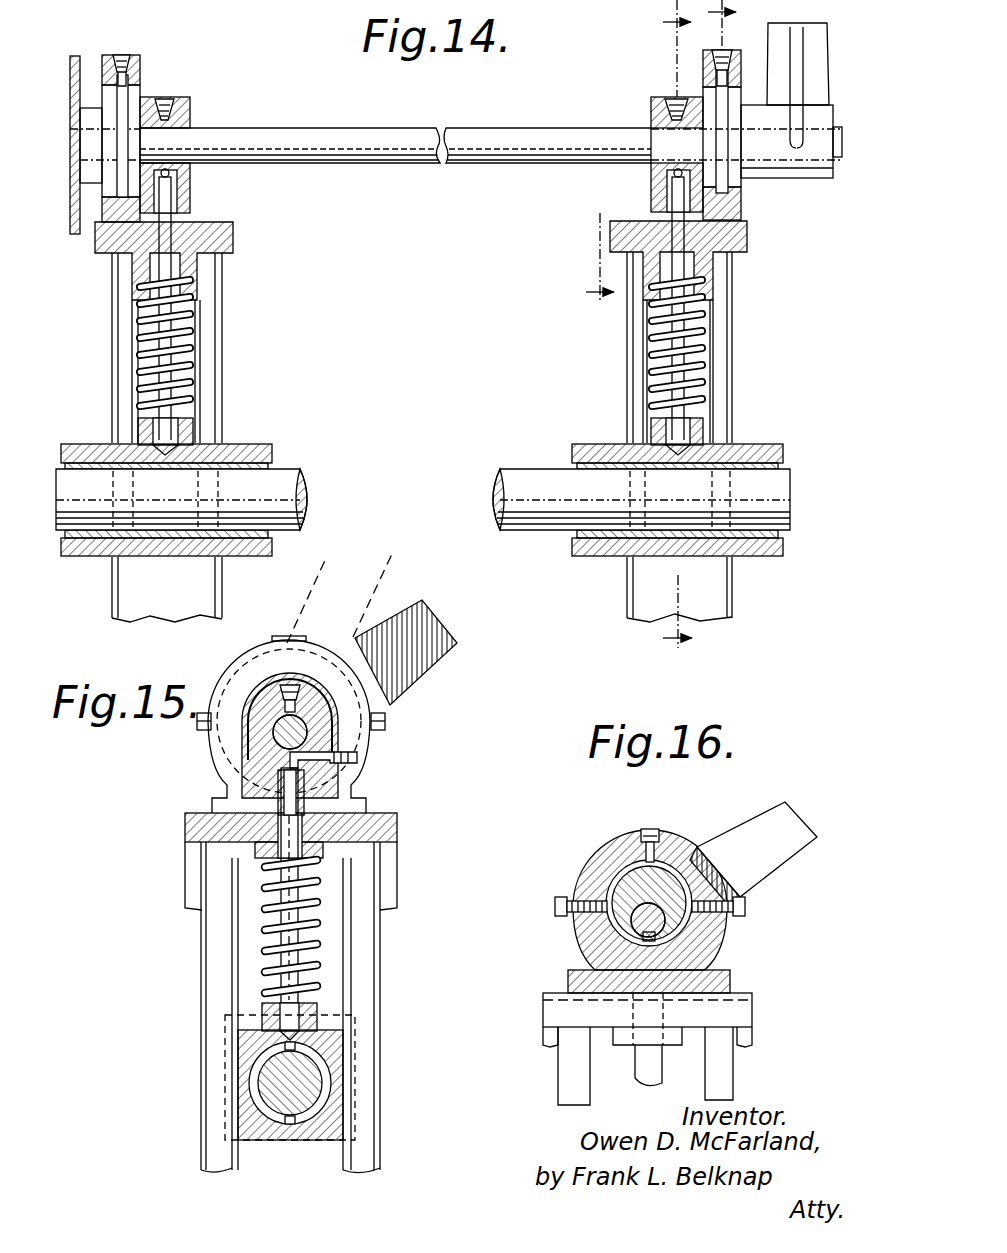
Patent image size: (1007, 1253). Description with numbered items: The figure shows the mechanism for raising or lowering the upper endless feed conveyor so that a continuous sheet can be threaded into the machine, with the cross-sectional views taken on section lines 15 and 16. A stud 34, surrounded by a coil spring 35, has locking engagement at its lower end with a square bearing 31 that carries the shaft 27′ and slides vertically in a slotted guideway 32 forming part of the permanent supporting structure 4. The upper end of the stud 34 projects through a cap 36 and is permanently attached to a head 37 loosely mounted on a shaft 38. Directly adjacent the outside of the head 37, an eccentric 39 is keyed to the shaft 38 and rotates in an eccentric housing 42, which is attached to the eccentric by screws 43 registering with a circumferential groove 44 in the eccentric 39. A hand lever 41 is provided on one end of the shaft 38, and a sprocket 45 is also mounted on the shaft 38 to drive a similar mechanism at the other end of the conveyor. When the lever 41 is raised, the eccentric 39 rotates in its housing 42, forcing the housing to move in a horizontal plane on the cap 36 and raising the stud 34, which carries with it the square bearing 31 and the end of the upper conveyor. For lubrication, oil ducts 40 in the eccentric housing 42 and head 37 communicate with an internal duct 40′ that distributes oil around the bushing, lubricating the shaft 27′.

In FIG. 14, the permanent supporting structure 4 is at (222, 600).
In FIG. 15, the permanent supporting structure 4 is at (201, 997).
In FIG. 14, the section line 15— 15 is at (673, 335).
In FIG. 14, the section line 16— 16 is at (659, 165).
In FIG. 14, the shaft 27′ is at (306, 478).
In FIG. 15, the shaft 27′ is at (270, 1140).
In FIG. 14, the square bearing 31 is at (262, 445).
In FIG. 15, the square bearing 31 is at (330, 1056).
In FIG. 15, the slotted guideway 32 is at (343, 975).
In FIG. 14, the stud 34 is at (167, 352).
In FIG. 15, the stud 34 is at (300, 905).
In FIG. 16, the stud 34 is at (657, 1067).
In FIG. 14, the coil spring 35 is at (185, 345).
In FIG. 15, the coil spring 35 is at (302, 950).
In FIG. 14, the cap 36 is at (235, 240).
In FIG. 15, the cap 36 is at (398, 826).
In FIG. 14, the head 37 is at (192, 200).
In FIG. 15, the head 37 is at (340, 778).
In FIG. 14, the shaft 38 is at (276, 130).
In FIG. 15, the shaft 38 is at (286, 734).
In FIG. 16, the shaft 38 is at (617, 862).
In FIG. 14, the eccentric 39 is at (143, 100).
In FIG. 16, the eccentric 39 is at (648, 870).
In FIG. 14, the oil duct 40 is at (122, 56).
In FIG. 15, the oil duct 40 is at (288, 688).
In FIG. 16, the oil duct 40 is at (650, 829).
In FIG. 15, the internal duct 40′ is at (268, 938).
In FIG. 14, the hand lever 41 is at (820, 46).
In FIG. 15, the hand lever 41 is at (452, 683).
In FIG. 16, the hand lever 41 is at (780, 856).
In FIG. 14, the eccentric housing 42 is at (140, 63).
In FIG. 15, the eccentric housing 42 is at (237, 672).
In FIG. 16, the eccentric housing 42 is at (727, 942).
In FIG. 16, the screw 43 is at (750, 906).
In FIG. 14, the circumferential groove 44 is at (123, 152).
In FIG. 16, the circumferential groove 44 is at (640, 927).
In FIG. 14, the sprocket 45 is at (75, 226).